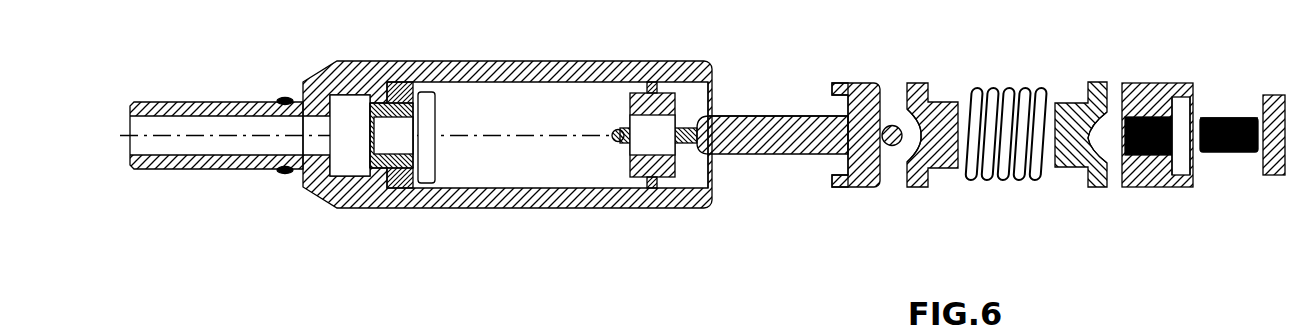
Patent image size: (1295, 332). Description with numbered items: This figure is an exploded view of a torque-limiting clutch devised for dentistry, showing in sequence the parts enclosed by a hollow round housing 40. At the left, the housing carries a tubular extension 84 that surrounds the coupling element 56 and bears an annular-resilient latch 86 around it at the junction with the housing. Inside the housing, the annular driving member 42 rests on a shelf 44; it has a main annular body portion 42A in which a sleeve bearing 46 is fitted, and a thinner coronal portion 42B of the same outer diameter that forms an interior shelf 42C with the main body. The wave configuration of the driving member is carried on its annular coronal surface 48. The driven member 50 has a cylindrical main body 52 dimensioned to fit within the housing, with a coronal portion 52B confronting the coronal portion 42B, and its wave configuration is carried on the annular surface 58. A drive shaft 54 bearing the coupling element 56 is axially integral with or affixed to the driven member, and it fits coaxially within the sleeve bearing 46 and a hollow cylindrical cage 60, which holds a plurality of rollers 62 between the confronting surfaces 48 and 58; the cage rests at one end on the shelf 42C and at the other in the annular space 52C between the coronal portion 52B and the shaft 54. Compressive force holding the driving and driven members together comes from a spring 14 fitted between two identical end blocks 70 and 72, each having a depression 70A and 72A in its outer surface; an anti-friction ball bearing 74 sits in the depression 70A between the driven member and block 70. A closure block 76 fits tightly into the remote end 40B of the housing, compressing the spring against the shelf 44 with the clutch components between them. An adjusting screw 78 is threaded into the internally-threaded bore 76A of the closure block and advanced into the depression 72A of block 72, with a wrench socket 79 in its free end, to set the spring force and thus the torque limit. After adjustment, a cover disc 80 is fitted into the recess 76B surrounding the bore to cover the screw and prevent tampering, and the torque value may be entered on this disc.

The spring 14 is at (1010, 182).
The housing 40 is at (515, 198).
The remote end of the housing 40B is at (712, 178).
The driving member 42 is at (410, 86).
The main annular body portion 42A is at (397, 190).
The coronal portion of the driving member 42B is at (432, 175).
The interior shelf 42C is at (435, 95).
The shelf 44 is at (382, 83).
The sleeve bearing 46 is at (352, 207).
The annular coronal surface 48 is at (437, 100).
The driven member 50 is at (787, 158).
The main body of the driven member 52 is at (865, 188).
The coronal portion of the driven member 52B is at (843, 82).
The annular space 52C is at (847, 102).
The drive shaft 54 is at (795, 116).
The coupling element 56 is at (615, 128).
The annular surface of the driven member 58 is at (833, 186).
The cage 60 is at (627, 172).
The rollers 62 is at (673, 195).
The end block 70 is at (915, 188).
The depression 70A is at (902, 158).
The end block 72 is at (1097, 188).
The depression 72A is at (1114, 100).
The anti-friction ball bearing 74 is at (895, 126).
The closure block 76 is at (1153, 188).
The internally-threaded bore 76A is at (1168, 100).
The recess 76B is at (1207, 162).
The adjusting screw 78 is at (1232, 155).
The wrench socket 79 is at (1250, 118).
The cover disc 80 is at (1277, 176).
The tubular extension 84 is at (187, 103).
The annular-resilient latch 86 is at (283, 173).